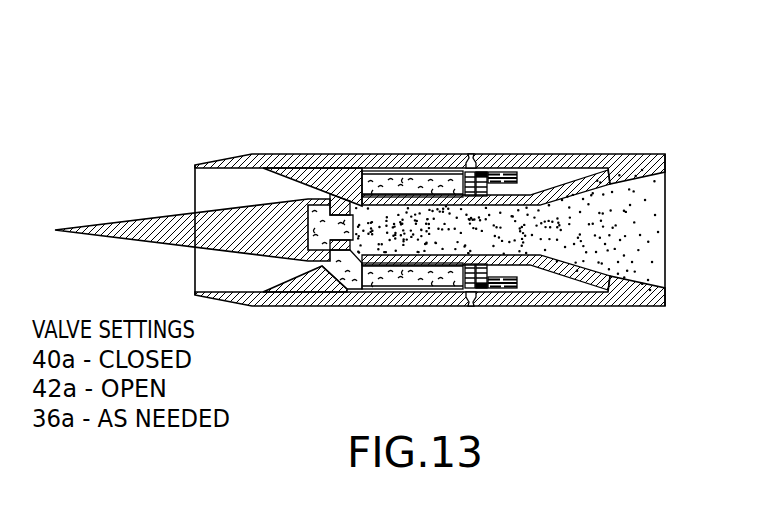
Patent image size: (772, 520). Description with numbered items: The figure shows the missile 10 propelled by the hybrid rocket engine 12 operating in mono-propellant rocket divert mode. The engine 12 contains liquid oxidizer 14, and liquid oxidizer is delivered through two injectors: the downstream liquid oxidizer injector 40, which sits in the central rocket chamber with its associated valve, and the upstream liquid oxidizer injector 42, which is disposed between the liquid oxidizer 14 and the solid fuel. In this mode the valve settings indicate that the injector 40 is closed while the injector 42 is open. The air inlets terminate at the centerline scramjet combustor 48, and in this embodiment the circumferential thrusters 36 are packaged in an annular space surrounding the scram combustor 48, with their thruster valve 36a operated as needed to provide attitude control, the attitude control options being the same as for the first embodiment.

The missile 10 is at (217, 107).
The engine 12 is at (553, 107).
The liquid oxidizer 14 is at (504, 288).
The circumferential thrusters 36 is at (468, 292).
The valve of circumferential thrusters 36a is at (456, 276).
The downstream liquid oxidizer injector 40 is at (341, 205).
The upstream liquid oxidizer injector 42 is at (484, 175).
The centerline scramjet combustor 48 is at (518, 227).